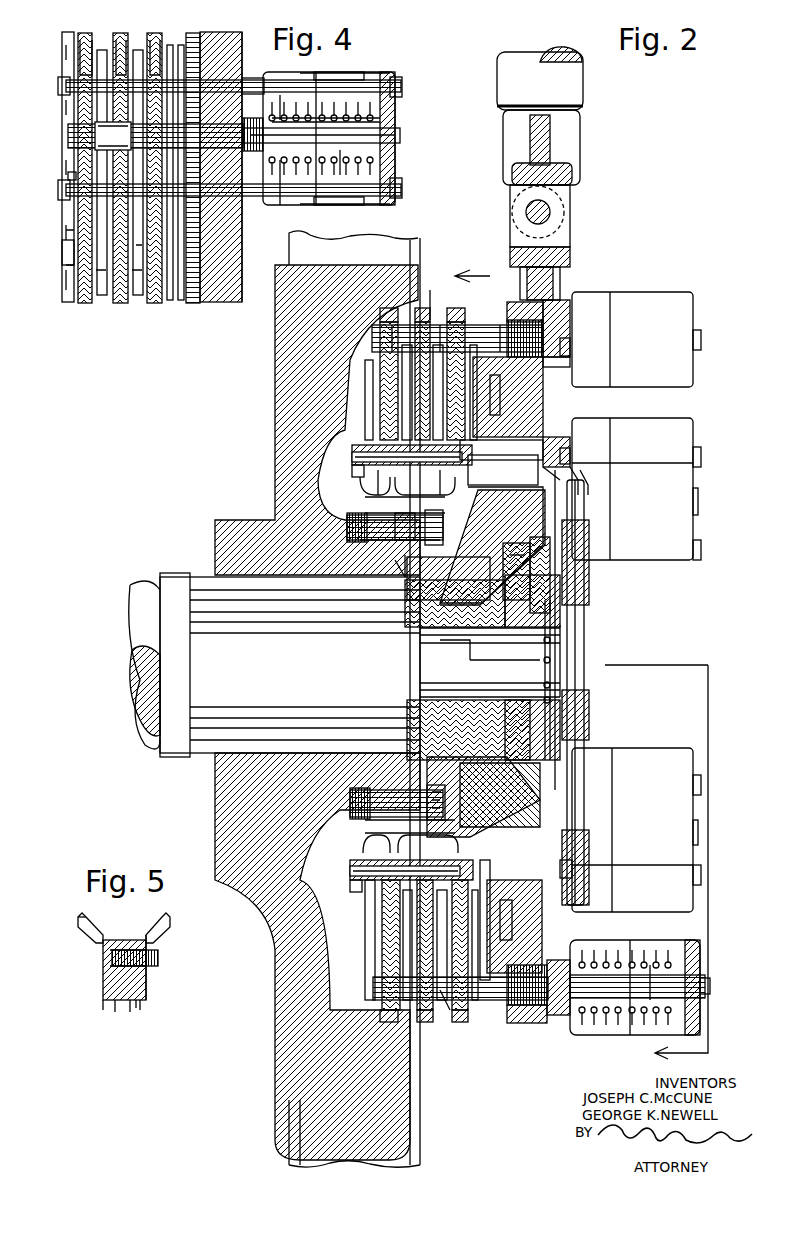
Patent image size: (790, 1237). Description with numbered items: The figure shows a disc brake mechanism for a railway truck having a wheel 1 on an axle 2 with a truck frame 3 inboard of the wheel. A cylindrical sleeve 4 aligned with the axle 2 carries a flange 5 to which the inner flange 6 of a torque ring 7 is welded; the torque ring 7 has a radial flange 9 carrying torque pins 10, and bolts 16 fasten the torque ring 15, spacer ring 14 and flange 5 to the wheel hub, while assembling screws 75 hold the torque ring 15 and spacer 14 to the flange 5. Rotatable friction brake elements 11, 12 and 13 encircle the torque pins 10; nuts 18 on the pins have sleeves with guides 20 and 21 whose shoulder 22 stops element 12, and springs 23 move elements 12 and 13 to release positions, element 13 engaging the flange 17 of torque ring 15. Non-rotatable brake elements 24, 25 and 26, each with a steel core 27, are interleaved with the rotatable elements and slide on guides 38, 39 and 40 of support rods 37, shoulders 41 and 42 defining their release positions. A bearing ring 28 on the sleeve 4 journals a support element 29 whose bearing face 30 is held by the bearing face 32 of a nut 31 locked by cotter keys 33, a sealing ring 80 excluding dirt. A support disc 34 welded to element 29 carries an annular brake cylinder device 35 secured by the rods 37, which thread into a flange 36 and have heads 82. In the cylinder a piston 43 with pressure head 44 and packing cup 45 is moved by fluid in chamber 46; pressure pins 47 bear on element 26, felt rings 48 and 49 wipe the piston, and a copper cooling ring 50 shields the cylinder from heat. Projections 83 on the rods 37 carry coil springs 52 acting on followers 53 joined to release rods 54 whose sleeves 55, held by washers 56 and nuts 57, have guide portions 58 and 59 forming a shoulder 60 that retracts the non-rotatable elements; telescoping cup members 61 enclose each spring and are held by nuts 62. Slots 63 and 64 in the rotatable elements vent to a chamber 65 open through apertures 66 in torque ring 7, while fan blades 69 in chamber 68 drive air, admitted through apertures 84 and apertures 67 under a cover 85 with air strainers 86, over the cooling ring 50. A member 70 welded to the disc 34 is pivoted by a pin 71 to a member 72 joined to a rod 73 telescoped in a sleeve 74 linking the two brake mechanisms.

In FIG. 2, the wheel 1 is at (277, 1086).
In FIG. 2, the axle 2 is at (202, 582).
In FIG. 2, the truck frame 3 is at (573, 665).
In FIG. 2, the cylindrical sleeve 4 is at (543, 630).
In FIG. 2, the flange 5 is at (398, 572).
In FIG. 5, the flange 5 is at (112, 1005).
In FIG. 2, the inner peripheral flange 6 is at (372, 545).
In FIG. 5, the inner peripheral flange 6 is at (104, 975).
In FIG. 2, the torque ring 7 is at (365, 493).
In FIG. 5, the torque ring 7 is at (95, 937).
In FIG. 2, the outer radial flange 9 is at (352, 462).
In FIG. 5, the outer radial flange 9 is at (78, 920).
In FIG. 2, the torque pins 10 is at (355, 452).
In FIG. 4, the rotatable friction brake element 11 is at (66, 216).
In FIG. 2, the rotatable friction brake element 11 is at (405, 420).
In FIG. 4, the rotatable friction brake element 12 is at (118, 300).
In FIG. 2, the rotatable friction brake element 12 is at (405, 398).
In FIG. 4, the rotatable friction brake element 13 is at (152, 300).
In FIG. 2, the rotatable friction brake element 13 is at (440, 388).
In FIG. 2, the spacer ring 14 is at (405, 568).
In FIG. 5, the spacer ring 14 is at (135, 1005).
In FIG. 2, the torque ring 15 is at (480, 535).
In FIG. 5, the torque ring 15 is at (160, 940).
In FIG. 2, the bolts 16 is at (316, 549).
In FIG. 2, the radial flange 17 is at (465, 468).
In FIG. 5, the radial flange 17 is at (170, 920).
In FIG. 2, the nut 18 is at (475, 447).
In FIG. 2, the cylindrical guide 20 is at (437, 527).
In FIG. 2, the cylindrical guide 21 is at (409, 485).
In FIG. 2, the shoulder 22 is at (395, 527).
In FIG. 2, the spring 23 is at (362, 478).
In FIG. 4, the non-rotatable friction brake element 24 is at (80, 305).
In FIG. 2, the non-rotatable friction brake element 24 is at (393, 304).
In FIG. 4, the non-rotatable friction brake element 25 is at (137, 300).
In FIG. 2, the non-rotatable friction brake element 25 is at (430, 292).
In FIG. 4, the non-rotatable friction brake element 26 is at (169, 300).
In FIG. 2, the non-rotatable friction brake element 26 is at (452, 310).
In FIG. 4, the core 27 is at (100, 297).
In FIG. 2, the core 27 is at (368, 372).
In FIG. 2, the bearing ring 28 is at (450, 620).
In FIG. 2, the support element 29 is at (458, 790).
In FIG. 2, the radial bearing face 30 is at (515, 550).
In FIG. 2, the nut 31 is at (515, 572).
In FIG. 2, the radial bearing face 32 is at (495, 720).
In FIG. 2, the cotter keys 33 is at (546, 640).
In FIG. 4, the support disc 34 is at (242, 283).
In FIG. 2, the support disc 34 is at (540, 945).
In FIG. 2, the brake cylinder device 35 is at (565, 362).
In FIG. 4, the annular flange 36 is at (215, 303).
In FIG. 2, the annular flange 36 is at (515, 305).
In FIG. 4, the support rods 37 is at (235, 95).
In FIG. 2, the support rods 37 is at (548, 312).
In FIG. 2, the cylindrical guide 38 is at (375, 335).
In FIG. 2, the cylindrical guide 39 is at (407, 338).
In FIG. 2, the cylindrical guide 40 is at (443, 338).
In FIG. 4, the shoulder 41 is at (72, 128).
In FIG. 2, the shoulder 41 is at (378, 1000).
In FIG. 2, the shoulder 42 is at (405, 1012).
In FIG. 2, the brake cylinder piston 43 is at (528, 383).
In FIG. 2, the pressure head 44 is at (540, 452).
In FIG. 2, the packing cup 45 is at (505, 405).
In FIG. 2, the chamber 46 is at (532, 900).
In FIG. 4, the pressure pins 47 is at (113, 136).
In FIG. 2, the pressure pins 47 is at (505, 900).
In FIG. 4, the felt ring 48 is at (193, 303).
In FIG. 2, the felt ring 48 is at (482, 365).
In FIG. 2, the felt ring 49 is at (512, 470).
In FIG. 4, the cooling ring 50 is at (180, 300).
In FIG. 2, the cooling ring 50 is at (492, 920).
In FIG. 4, the coil spring 52 is at (321, 169).
In FIG. 2, the coil spring 52 is at (600, 960).
In FIG. 4, the follower 53 is at (348, 100).
In FIG. 2, the follower 53 is at (660, 960).
In FIG. 4, the release rods 54 is at (335, 85).
In FIG. 2, the release rods 54 is at (567, 345).
In FIG. 4, the sleeve 55 is at (68, 94).
In FIG. 4, the washer 56 is at (70, 176).
In FIG. 4, the nut 57 is at (60, 188).
In FIG. 4, the guide portion 58 is at (155, 72).
In FIG. 4, the guide portion 59 is at (88, 60).
In FIG. 4, the shoulder 60 is at (124, 72).
In FIG. 4, the cup shaped members 61 is at (300, 204).
In FIG. 2, the cup shaped members 61 is at (602, 425).
In FIG. 4, the nuts 62 is at (397, 80).
In FIG. 2, the nuts 62 is at (697, 332).
In FIG. 4, the slots 63 is at (66, 272).
In FIG. 2, the slots 63 is at (362, 908).
In FIG. 4, the slots 64 is at (100, 275).
In FIG. 2, the slots 64 is at (448, 1005).
In FIG. 2, the chamber 65 is at (355, 870).
In FIG. 2, the apertures 66 is at (380, 845).
In FIG. 2, the apertures 67 is at (572, 482).
In FIG. 2, the chamber 68 is at (580, 478).
In FIG. 2, the fan blades 69 is at (497, 832).
In FIG. 2, the member 70 is at (568, 258).
In FIG. 2, the pin 71 is at (550, 212).
In FIG. 2, the member 72 is at (578, 140).
In FIG. 2, the rod 73 is at (578, 58).
In FIG. 2, the sleeve 74 is at (580, 86).
In FIG. 5, the assembling screws 75 is at (158, 960).
In FIG. 2, the sealing ring 80 is at (448, 578).
In FIG. 4, the head 82 is at (255, 160).
In FIG. 2, the head 82 is at (560, 320).
In FIG. 4, the projection 83 is at (339, 166).
In FIG. 2, the projection 83 is at (698, 500).
In FIG. 2, the apertures 84 is at (370, 755).
In FIG. 2, the cover 85 is at (585, 600).
In FIG. 2, the air strainers 86 is at (590, 690).